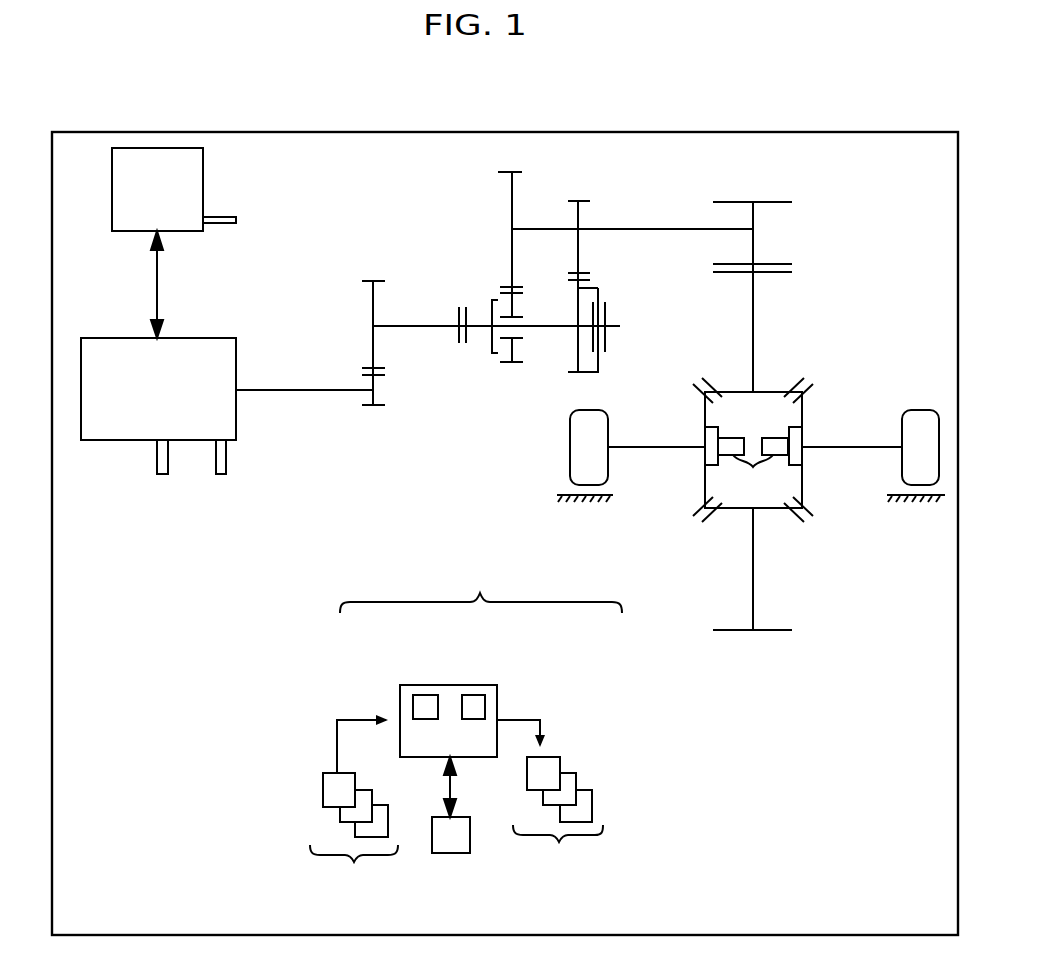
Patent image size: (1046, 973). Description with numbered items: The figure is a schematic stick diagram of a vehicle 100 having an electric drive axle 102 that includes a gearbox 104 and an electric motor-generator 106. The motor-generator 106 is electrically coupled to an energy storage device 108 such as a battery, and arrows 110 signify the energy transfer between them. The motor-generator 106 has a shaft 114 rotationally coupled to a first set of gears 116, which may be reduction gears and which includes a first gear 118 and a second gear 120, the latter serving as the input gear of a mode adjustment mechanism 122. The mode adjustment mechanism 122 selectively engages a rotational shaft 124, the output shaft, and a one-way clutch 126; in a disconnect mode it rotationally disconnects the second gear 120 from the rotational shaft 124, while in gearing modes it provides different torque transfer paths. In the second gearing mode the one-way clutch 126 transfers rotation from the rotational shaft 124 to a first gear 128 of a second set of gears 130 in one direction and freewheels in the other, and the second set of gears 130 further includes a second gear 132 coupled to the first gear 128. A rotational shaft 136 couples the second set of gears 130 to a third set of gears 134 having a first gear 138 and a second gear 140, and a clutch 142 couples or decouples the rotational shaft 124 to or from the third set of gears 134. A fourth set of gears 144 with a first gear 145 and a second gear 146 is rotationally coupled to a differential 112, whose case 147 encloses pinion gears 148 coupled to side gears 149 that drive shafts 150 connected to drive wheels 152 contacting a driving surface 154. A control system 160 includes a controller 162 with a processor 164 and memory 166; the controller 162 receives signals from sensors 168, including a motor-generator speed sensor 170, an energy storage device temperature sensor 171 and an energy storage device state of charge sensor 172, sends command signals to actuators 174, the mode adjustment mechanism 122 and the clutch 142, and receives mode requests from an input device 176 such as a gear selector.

The vehicle 100 is at (72, 131).
The electric drive axle 102 is at (160, 792).
The gearbox 104 is at (326, 507).
The electric motor-generator 106 is at (98, 441).
The energy storage device 108 is at (203, 185).
The arrows 110 is at (159, 293).
The differential 112 is at (820, 378).
The shaft 114 is at (290, 388).
The first set of gears 116 is at (360, 308).
The first gear 118 is at (378, 390).
The second gear 120 is at (375, 305).
The mode adjustment mechanism 122 is at (462, 356).
The rotational shaft 124 is at (484, 323).
The one-way clutch 126 is at (522, 352).
The first gear 128 is at (516, 303).
The second set of gears 130 is at (494, 209).
The second gear 132 is at (510, 215).
The third set of gears 134 is at (593, 216).
The rotational shaft 136 is at (556, 228).
The first gear 138 is at (574, 285).
The second gear 140 is at (583, 243).
The clutch 142 is at (615, 340).
The fourth set of gears 144 is at (799, 219).
The first gear 145 is at (755, 253).
The second gear 146 is at (755, 303).
The case 147 is at (770, 386).
The pinion gears 148 is at (753, 472).
The side gears 149 is at (705, 440).
The shafts 150 is at (663, 450).
The drive wheels 152 is at (607, 416).
The driving surface 154 is at (563, 490).
The control system 160 is at (481, 587).
The controller 162 is at (447, 685).
The processor 164 is at (413, 705).
The memory 166 is at (485, 705).
The sensors 168 is at (354, 835).
The motor-generator speed sensor 170 is at (220, 476).
The energy storage device temperature sensor 171 is at (161, 476).
The energy storage device state of charge sensor 172 is at (237, 219).
The actuators 174 is at (558, 817).
The input device 176 is at (452, 855).